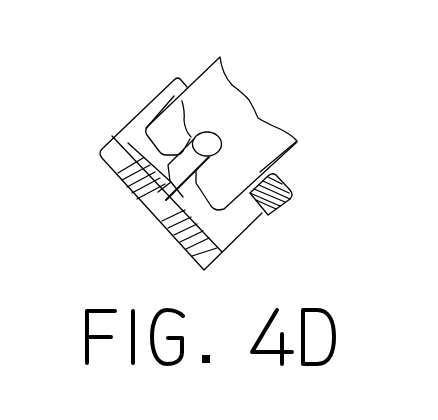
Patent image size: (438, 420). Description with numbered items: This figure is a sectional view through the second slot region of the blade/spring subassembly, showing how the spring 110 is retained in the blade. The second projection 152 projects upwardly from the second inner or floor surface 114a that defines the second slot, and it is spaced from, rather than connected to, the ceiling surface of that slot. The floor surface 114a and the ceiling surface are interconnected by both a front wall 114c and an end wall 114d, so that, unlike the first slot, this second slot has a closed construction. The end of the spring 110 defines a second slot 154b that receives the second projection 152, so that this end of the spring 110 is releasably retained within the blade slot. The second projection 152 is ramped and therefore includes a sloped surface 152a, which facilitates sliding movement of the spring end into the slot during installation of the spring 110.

The spring 110 is at (230, 105).
The second projection 152 is at (220, 153).
The sloped surface 152a is at (182, 101).
The second slot 154b is at (221, 141).
The second inner or floor surface 114a is at (240, 225).
The front wall 114c is at (292, 198).
The end wall 114d is at (151, 205).